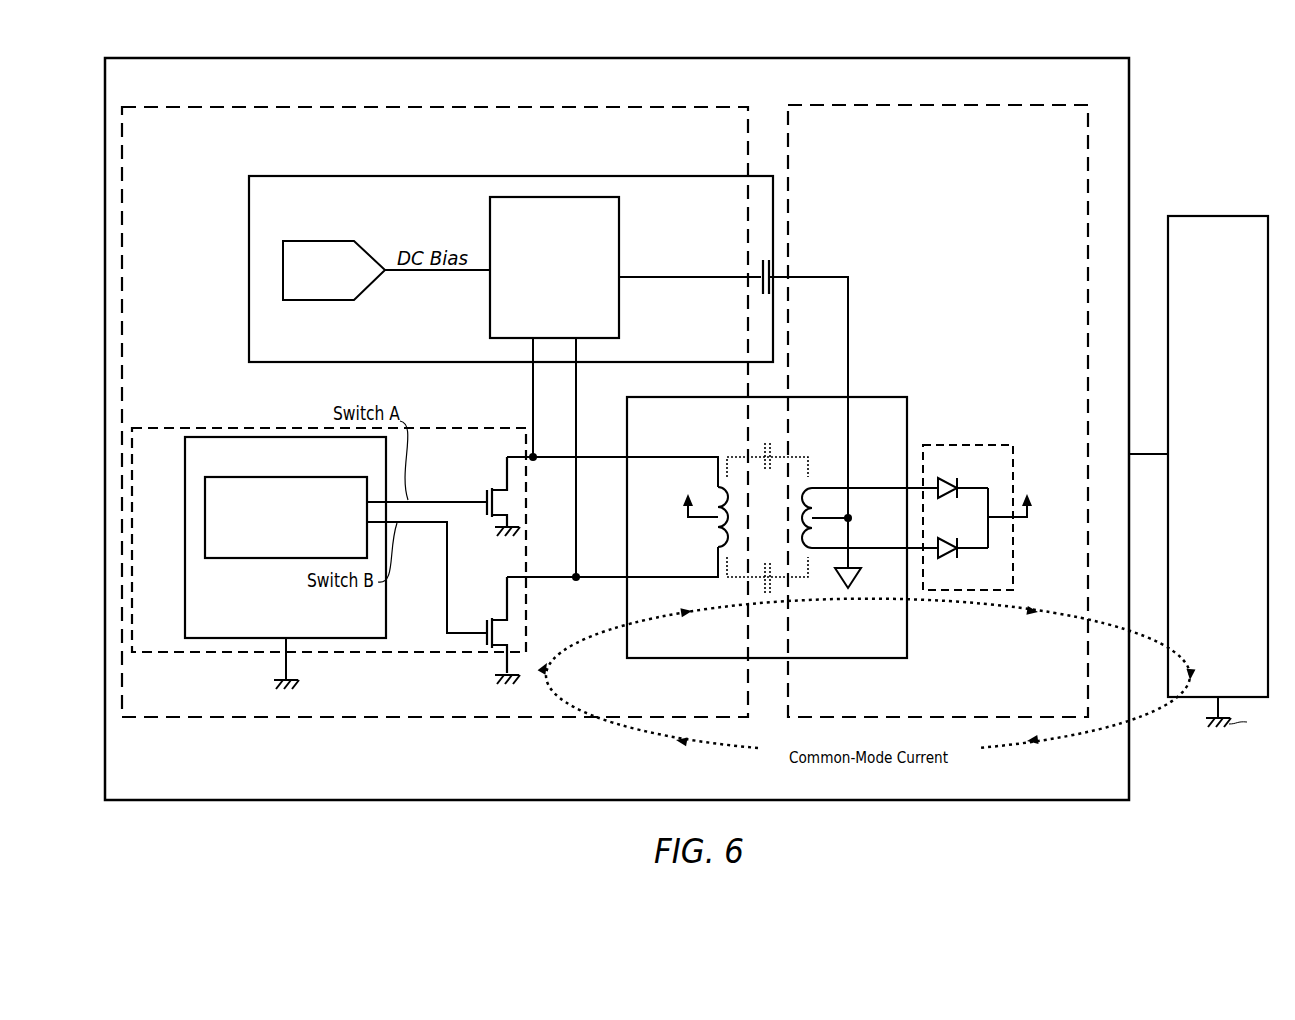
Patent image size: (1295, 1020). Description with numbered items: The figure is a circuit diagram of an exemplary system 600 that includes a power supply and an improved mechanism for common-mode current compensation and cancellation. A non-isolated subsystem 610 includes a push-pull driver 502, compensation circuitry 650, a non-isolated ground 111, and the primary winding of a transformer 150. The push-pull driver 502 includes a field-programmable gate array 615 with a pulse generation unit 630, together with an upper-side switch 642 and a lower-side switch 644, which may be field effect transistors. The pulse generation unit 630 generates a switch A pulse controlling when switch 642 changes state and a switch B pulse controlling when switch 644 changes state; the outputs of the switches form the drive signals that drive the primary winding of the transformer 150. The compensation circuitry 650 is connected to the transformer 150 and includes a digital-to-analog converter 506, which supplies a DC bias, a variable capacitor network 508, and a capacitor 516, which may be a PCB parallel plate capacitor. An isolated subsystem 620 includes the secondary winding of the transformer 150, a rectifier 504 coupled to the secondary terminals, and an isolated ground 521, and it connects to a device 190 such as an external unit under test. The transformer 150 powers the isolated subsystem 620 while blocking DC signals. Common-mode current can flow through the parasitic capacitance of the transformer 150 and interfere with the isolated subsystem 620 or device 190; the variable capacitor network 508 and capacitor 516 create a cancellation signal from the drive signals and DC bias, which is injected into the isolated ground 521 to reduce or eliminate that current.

The system 600 is at (1122, 86).
The non-isolated subsystem 610 is at (362, 135).
The isolated subsystem 620 is at (993, 133).
The compensation circuitry 650 is at (286, 221).
The digital-to-analog converter 506 is at (345, 300).
The variable capacitor network 508 is at (570, 330).
The capacitor 516 is at (773, 265).
The push-pull driver 502 is at (170, 646).
The field-programmable gate array 615 is at (330, 628).
The pulse generation unit 630 is at (271, 546).
The upper-side switch 642 is at (502, 487).
The lower-side switch 644 is at (504, 617).
The non-isolated ground 111 is at (296, 684).
The transformer 150 is at (667, 443).
The isolated ground 521 is at (857, 578).
The rectifier 504 is at (1010, 585).
The device 190 is at (1203, 478).